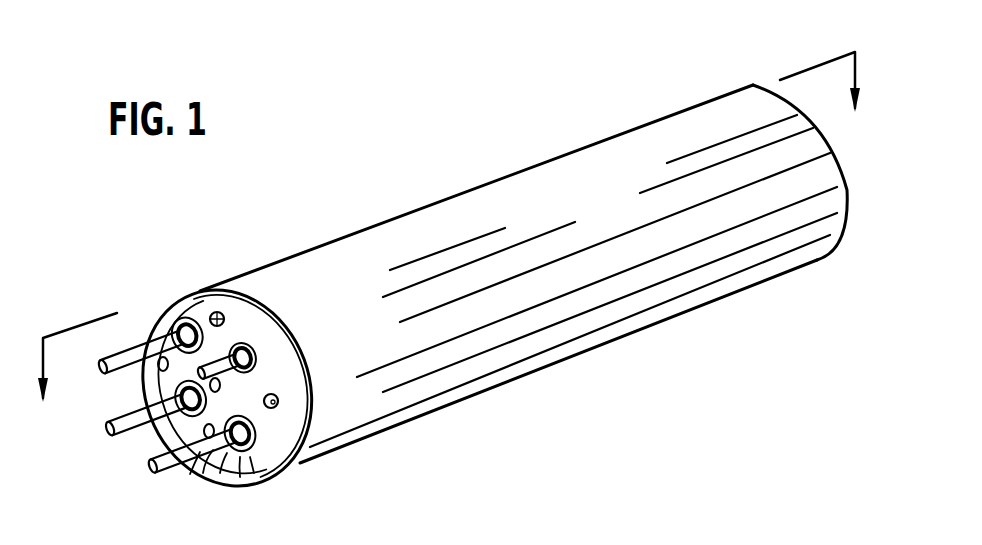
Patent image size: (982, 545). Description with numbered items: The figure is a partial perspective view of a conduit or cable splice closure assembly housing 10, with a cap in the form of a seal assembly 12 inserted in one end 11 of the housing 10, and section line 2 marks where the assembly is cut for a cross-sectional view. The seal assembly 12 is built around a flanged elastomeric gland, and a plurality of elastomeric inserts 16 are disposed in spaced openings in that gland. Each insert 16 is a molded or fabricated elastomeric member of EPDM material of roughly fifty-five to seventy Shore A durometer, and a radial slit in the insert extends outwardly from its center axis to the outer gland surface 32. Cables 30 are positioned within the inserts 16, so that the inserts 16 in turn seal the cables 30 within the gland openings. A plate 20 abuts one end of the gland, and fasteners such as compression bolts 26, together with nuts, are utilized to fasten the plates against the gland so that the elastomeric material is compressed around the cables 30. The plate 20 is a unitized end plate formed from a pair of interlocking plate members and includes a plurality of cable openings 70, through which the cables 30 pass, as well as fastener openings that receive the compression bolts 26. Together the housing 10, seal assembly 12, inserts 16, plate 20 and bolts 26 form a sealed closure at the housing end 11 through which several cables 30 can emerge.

The section line 2- 2 is at (448, 201).
The splice closure assembly housing 10 is at (370, 230).
The end of housing 11 is at (284, 483).
The seal assembly 12 is at (262, 478).
The elastomeric insert 16 is at (180, 379).
The plate 20 is at (197, 463).
The compression bolt 26 is at (224, 314).
The cable 30 is at (108, 368).
The outer gland surface 32 is at (282, 324).
The cable opening 70 is at (238, 481).